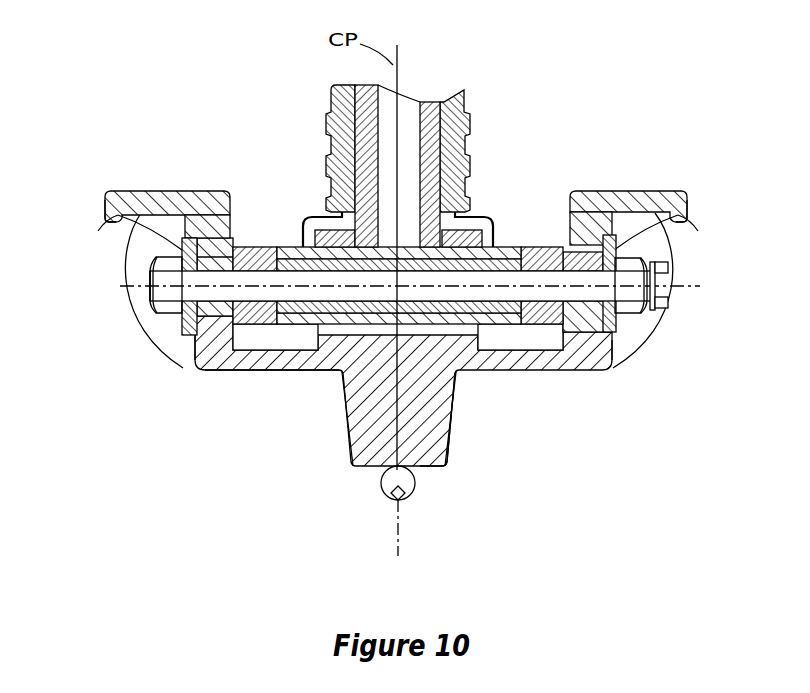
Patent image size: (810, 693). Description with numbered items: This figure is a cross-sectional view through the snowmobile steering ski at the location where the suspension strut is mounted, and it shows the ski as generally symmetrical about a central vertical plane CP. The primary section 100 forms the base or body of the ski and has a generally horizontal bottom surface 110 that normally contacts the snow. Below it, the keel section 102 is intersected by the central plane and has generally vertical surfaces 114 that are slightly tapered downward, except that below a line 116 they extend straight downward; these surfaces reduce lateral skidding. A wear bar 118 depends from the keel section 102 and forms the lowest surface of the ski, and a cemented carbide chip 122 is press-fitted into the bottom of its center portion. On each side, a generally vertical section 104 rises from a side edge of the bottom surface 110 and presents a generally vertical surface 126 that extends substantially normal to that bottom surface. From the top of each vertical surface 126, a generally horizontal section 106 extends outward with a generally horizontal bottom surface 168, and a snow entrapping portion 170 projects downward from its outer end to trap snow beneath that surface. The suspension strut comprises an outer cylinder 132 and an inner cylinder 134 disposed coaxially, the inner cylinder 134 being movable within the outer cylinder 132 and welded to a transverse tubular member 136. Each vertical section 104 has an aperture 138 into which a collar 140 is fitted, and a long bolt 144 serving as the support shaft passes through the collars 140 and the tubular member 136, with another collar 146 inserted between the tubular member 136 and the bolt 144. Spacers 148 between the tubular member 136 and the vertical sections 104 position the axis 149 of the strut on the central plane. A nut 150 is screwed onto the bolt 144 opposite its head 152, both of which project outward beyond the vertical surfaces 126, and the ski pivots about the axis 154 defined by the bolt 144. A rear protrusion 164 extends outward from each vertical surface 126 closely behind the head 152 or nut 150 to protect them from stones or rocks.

The primary section 100 is at (268, 373).
The keel section 102 is at (346, 429).
The generally vertical section 104 is at (162, 350).
The generally horizontal section 106 is at (160, 189).
The bottom surface 110 is at (222, 371).
The generally vertical surface 114 is at (452, 413).
The line 116 is at (445, 440).
The wear bar 118 is at (407, 480).
The cemented carbide chip 122 is at (400, 503).
The generally vertical surface 126 is at (181, 343).
The outer cylinder 132 is at (466, 110).
The inner cylinder 134 is at (423, 100).
The transverse tubular member 136 is at (300, 240).
The aperture 138 is at (184, 320).
The collar 140 is at (150, 258).
The bolt 144 is at (486, 292).
The collar 146 is at (512, 246).
The spacer 148 is at (252, 246).
The axis 149 is at (390, 73).
The nut 150 is at (660, 322).
The head 152 is at (152, 292).
The axis 154 is at (670, 283).
The rear protrusion 164 is at (182, 296).
The generally horizontal bottom surface 168 is at (98, 231).
The snow entrapping portion 170 is at (103, 222).